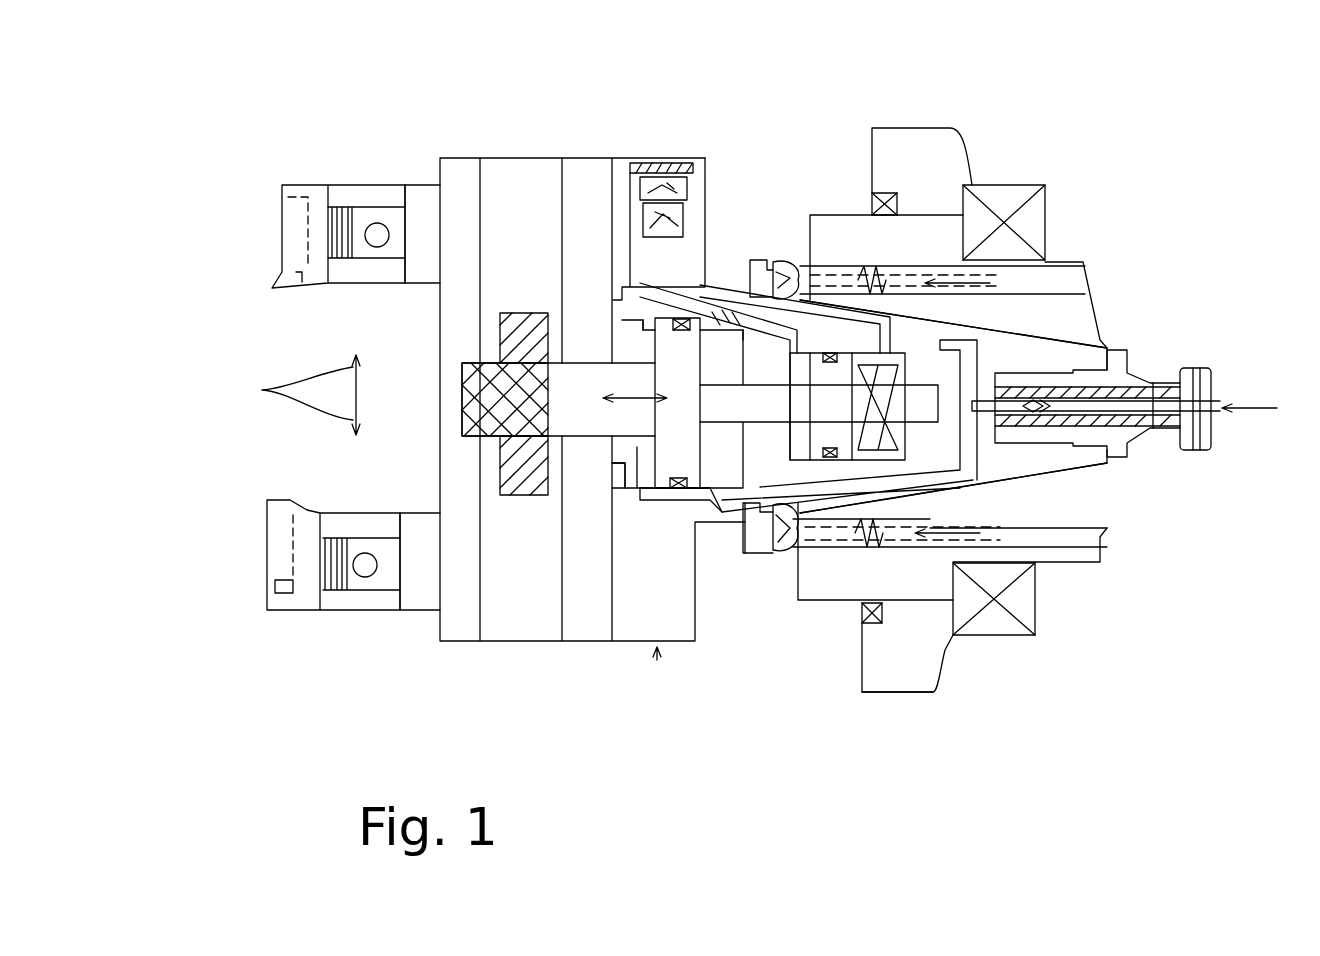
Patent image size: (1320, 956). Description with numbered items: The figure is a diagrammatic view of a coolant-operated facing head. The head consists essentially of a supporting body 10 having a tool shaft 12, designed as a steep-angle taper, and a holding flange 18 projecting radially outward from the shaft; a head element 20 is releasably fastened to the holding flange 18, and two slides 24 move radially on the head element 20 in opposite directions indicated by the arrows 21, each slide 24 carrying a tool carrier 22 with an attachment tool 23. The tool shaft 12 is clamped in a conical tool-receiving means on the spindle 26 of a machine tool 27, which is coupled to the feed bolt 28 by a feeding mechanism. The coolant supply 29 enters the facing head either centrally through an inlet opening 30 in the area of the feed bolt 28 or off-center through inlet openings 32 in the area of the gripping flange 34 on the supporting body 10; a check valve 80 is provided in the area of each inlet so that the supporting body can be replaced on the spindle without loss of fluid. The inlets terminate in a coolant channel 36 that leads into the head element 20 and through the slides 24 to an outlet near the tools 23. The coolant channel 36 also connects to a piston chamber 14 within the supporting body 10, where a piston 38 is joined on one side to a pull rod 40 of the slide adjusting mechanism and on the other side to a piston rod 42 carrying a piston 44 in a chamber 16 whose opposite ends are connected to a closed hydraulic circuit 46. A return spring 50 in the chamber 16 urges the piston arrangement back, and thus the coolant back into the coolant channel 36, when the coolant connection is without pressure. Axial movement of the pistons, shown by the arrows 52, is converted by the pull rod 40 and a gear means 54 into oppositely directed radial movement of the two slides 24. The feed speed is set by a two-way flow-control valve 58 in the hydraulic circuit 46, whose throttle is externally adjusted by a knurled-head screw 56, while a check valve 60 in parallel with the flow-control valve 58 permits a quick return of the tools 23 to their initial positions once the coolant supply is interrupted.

The supporting body 10 is at (657, 662).
The tool shaft 12 is at (1015, 345).
The piston chamber 14 is at (740, 300).
The chamber 16 is at (900, 345).
The holding flange 18 is at (675, 605).
The head element 20 is at (523, 610).
The arrows 21 is at (295, 395).
The tool carrier 22 is at (376, 222).
The attachment tool 23 is at (300, 215).
The slide 24 is at (418, 337).
The spindle 26 is at (838, 577).
The machine tool 27 is at (945, 650).
The feed bolt 28 is at (1188, 453).
The coolant supply 29 is at (1243, 403).
The inlet opening 30 is at (1195, 368).
The inlet openings 32 is at (790, 260).
The gripping flange 34 is at (747, 560).
The coolant channel 36 is at (660, 535).
The piston 38 is at (693, 330).
The pull rod 40 is at (585, 395).
The piston rod 42 is at (760, 410).
The piston 44 is at (850, 355).
The closed hydraulic circuit 46 is at (630, 230).
The return spring 50 is at (895, 440).
The arrows 52 is at (603, 398).
The gear means 54 is at (530, 347).
The knurled-head screw 56 is at (665, 163).
The two-way flow-control valve 58 is at (622, 230).
The check valve 60 is at (703, 230).
The check valve 80 is at (1038, 443).